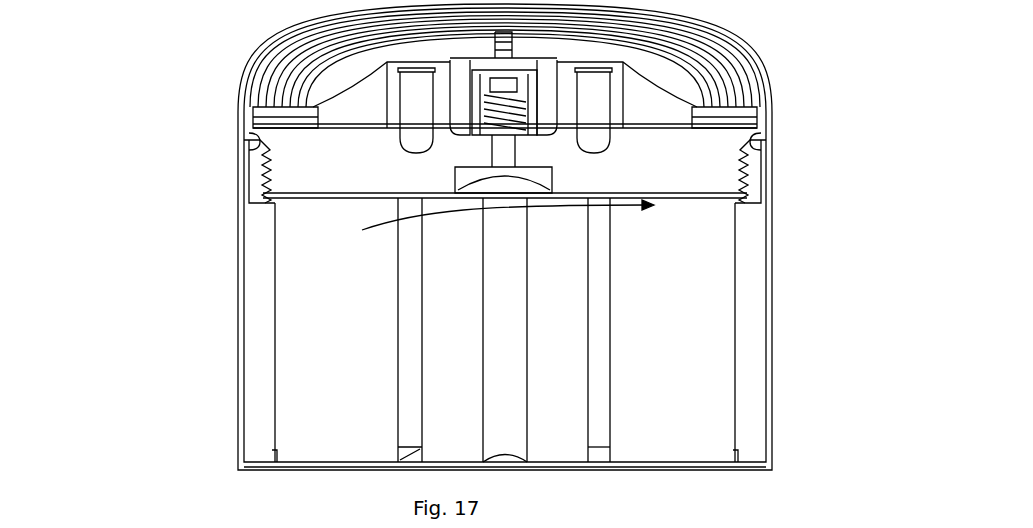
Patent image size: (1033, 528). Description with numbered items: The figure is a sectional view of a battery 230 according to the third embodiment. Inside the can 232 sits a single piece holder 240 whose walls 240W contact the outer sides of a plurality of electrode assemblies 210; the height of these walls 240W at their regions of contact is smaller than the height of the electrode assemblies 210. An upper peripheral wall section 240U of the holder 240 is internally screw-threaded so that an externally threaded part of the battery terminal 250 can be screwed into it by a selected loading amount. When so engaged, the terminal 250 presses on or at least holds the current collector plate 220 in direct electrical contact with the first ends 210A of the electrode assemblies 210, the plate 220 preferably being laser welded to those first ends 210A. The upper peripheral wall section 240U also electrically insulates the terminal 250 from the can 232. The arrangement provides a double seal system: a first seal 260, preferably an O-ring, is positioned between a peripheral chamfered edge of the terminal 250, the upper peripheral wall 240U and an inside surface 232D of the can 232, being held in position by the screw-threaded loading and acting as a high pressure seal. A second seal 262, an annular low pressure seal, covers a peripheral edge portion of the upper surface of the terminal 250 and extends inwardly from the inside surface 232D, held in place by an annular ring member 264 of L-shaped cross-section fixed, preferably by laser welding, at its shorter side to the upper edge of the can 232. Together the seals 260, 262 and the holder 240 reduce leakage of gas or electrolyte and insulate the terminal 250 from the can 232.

The can 232 is at (240, 395).
The inside surface of the can 232D is at (247, 117).
The annular ring member 264 is at (757, 109).
The second seal 262 is at (757, 125).
The first seal 260 is at (763, 141).
The upper peripheral wall section 240U is at (755, 167).
The current collector plate 220 is at (677, 196).
The battery terminal 250 is at (681, 178).
The single piece holder 240 is at (757, 311).
The walls of the holder 240W is at (598, 259).
The electrode assemblies 210 is at (333, 374).
The first ends of the electrode assemblies 210A is at (336, 205).
The battery 230 is at (208, 197).